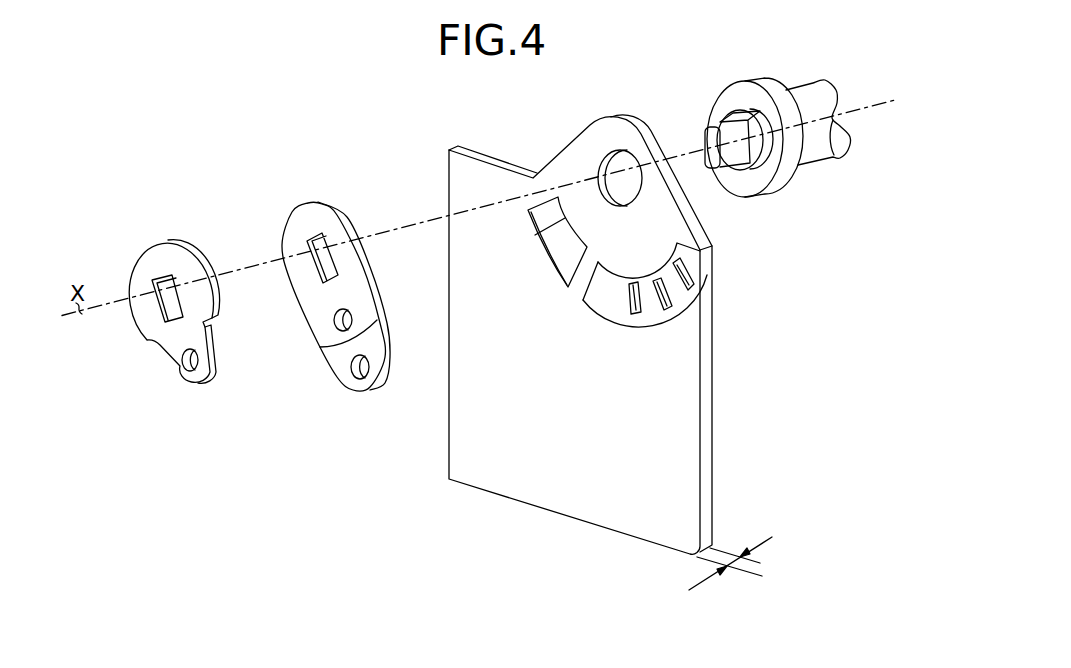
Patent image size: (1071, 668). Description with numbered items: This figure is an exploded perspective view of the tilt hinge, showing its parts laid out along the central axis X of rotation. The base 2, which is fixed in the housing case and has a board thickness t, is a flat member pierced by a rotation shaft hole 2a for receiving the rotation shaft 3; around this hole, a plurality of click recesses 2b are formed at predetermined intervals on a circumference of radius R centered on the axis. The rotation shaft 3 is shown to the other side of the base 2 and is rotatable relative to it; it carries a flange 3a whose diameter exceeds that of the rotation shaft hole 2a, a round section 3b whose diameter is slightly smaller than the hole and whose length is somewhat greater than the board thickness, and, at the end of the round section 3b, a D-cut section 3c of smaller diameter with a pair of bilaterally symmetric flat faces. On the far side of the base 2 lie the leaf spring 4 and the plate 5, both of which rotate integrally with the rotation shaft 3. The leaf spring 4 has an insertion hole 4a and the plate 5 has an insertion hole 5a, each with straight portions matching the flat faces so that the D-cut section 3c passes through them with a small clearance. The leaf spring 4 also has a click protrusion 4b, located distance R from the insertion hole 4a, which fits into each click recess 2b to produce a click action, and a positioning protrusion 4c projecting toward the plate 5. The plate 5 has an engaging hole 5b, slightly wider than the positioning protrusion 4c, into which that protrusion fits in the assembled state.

The base 2 is at (533, 498).
The rotation shaft hole 2a is at (611, 167).
The click recesses 2b is at (640, 307).
The rotation shaft 3 is at (751, 142).
The flange 3a is at (793, 180).
The round section 3b is at (757, 167).
The D-cut section 3c is at (712, 138).
The leaf spring 4 is at (326, 300).
The insertion hole 4a is at (316, 273).
The click protrusion 4b is at (355, 375).
The positioning protrusion 4c is at (338, 322).
The plate 5 is at (158, 316).
The insertion hole 5a is at (157, 297).
The engaging hole 5b is at (188, 373).